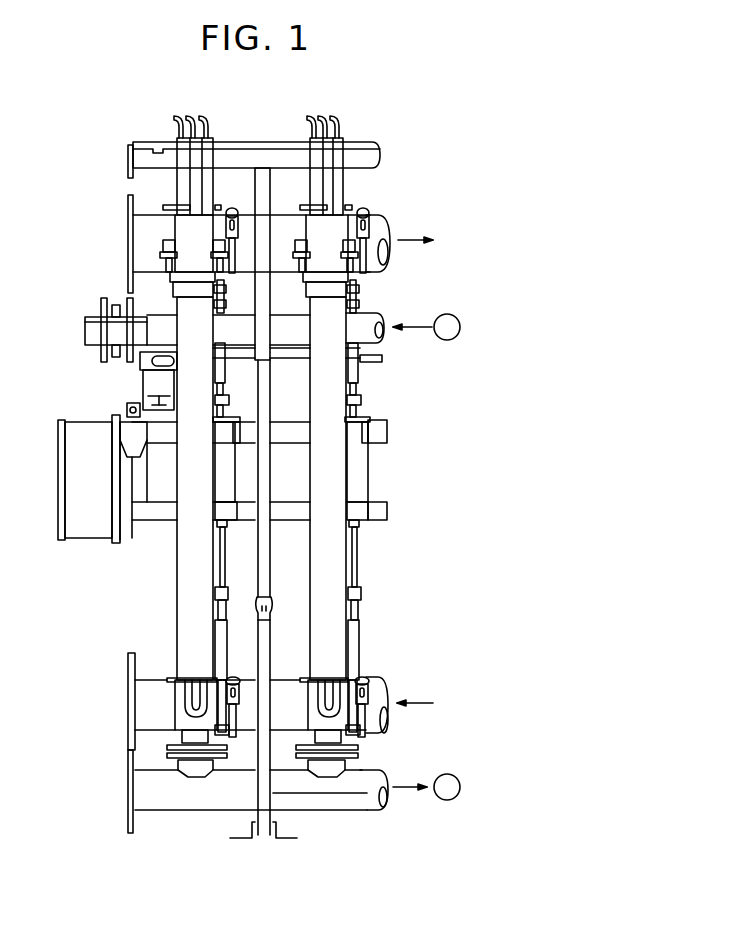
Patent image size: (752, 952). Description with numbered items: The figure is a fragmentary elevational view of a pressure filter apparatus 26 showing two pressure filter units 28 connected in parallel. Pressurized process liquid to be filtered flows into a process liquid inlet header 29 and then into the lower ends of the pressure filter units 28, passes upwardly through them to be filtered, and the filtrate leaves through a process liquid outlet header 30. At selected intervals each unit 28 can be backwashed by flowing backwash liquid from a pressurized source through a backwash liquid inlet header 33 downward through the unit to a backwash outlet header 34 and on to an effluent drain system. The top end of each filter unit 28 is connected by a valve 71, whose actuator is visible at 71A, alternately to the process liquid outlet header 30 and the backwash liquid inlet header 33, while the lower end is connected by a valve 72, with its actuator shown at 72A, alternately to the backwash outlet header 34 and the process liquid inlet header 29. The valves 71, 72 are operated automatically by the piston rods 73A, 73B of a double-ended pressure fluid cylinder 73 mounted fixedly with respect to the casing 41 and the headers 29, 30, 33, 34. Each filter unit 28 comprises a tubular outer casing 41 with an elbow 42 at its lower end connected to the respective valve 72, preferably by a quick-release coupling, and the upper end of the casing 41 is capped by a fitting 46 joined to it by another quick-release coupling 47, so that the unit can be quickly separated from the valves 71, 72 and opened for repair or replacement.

The pressure filter apparatus 26 is at (357, 132).
The pressure filter unit 28 is at (175, 565).
The process liquid inlet header 29 is at (385, 685).
The process liquid outlet header 30 is at (370, 222).
The backwash liquid inlet header 33 is at (380, 318).
The backwash outlet header 34 is at (384, 780).
The outer casing 41 is at (183, 598).
The elbow 42 is at (187, 693).
The fitting 46 is at (186, 234).
The quick-release coupling 47 is at (165, 250).
The valve 71 is at (168, 212).
The actuator 71A is at (240, 243).
The valve 72 is at (182, 708).
The actuator 72A is at (242, 705).
The double-ended pressure fluid cylinder 73 is at (225, 480).
The piston rod 73A is at (222, 305).
The piston rod 73B is at (222, 548).